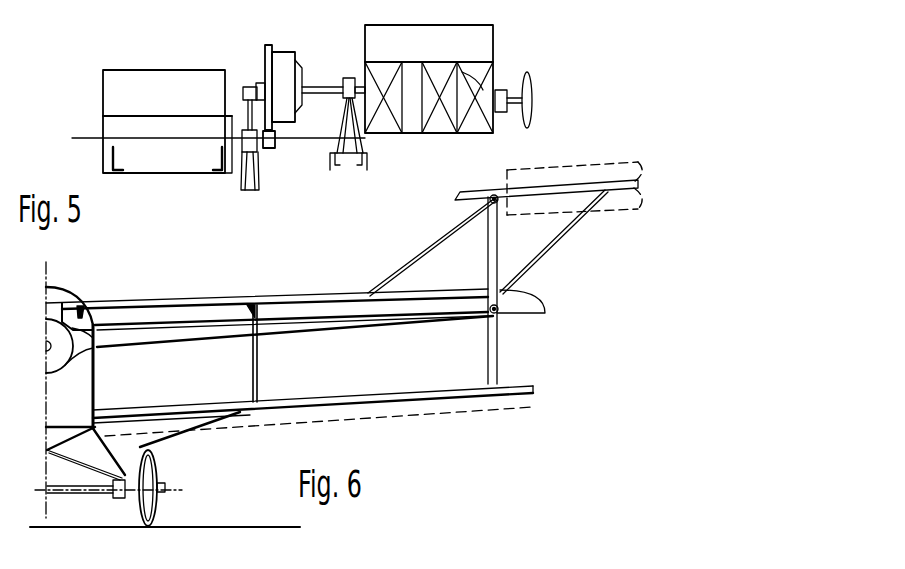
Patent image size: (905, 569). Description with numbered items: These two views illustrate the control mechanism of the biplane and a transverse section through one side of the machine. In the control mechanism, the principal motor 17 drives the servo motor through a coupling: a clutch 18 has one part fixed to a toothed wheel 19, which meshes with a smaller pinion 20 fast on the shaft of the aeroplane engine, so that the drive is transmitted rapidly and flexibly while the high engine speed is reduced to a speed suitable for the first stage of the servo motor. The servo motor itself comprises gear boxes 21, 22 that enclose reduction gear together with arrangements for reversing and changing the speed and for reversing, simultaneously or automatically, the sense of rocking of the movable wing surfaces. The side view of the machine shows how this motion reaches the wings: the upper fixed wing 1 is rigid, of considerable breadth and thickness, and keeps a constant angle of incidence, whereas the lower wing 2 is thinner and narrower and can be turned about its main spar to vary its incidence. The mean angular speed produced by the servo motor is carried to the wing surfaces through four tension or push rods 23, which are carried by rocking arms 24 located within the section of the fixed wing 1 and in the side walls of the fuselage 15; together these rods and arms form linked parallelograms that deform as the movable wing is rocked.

In FIG. 6, the fixed wing 1 is at (148, 300).
In FIG. 6, the lower wing 2 is at (283, 405).
In FIG. 6, the fuselage 15 is at (96, 388).
In FIG. 5, the principal motor 17 is at (153, 77).
In FIG. 5, the clutch 18 is at (280, 70).
In FIG. 5, the toothed wheel 19 is at (267, 60).
In FIG. 5, the pinion 20 is at (273, 148).
In FIG. 5, the gear box 21 is at (378, 128).
In FIG. 5, the gear box 22 is at (442, 123).
In FIG. 6, the tension or push rods 23 is at (188, 300).
In FIG. 6, the rocking arms 24 is at (81, 310).